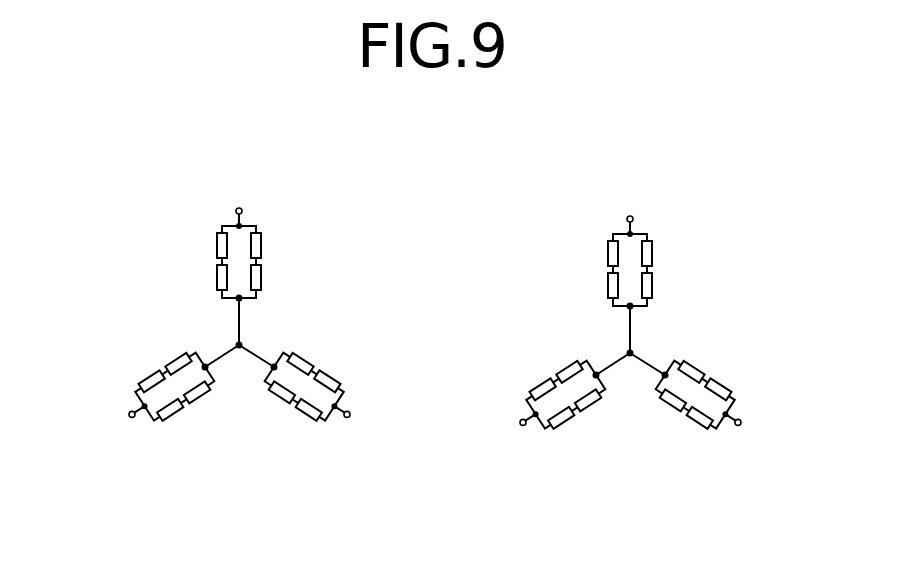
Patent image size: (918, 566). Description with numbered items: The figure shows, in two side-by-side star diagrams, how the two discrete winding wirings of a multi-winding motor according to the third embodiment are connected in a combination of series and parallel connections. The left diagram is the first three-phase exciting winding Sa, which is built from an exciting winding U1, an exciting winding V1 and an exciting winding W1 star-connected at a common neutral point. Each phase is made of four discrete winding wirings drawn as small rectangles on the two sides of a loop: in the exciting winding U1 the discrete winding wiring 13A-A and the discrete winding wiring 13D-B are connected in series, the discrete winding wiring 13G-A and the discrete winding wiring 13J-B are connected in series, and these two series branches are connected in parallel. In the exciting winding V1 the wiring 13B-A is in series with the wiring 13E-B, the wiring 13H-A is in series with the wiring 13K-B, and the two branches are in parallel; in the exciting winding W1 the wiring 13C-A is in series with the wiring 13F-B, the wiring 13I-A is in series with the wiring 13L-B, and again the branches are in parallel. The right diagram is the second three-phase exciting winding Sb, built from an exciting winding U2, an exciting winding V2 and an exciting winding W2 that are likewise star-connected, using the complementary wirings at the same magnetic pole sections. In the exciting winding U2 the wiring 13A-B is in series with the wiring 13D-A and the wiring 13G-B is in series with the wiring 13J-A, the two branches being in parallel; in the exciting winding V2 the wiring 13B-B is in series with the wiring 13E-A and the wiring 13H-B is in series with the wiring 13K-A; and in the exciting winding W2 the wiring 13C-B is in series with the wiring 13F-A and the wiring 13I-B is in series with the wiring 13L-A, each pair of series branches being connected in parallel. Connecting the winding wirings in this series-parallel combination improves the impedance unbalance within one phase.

The first three-phase exciting winding Sa is at (257, 336).
The second three-phase exciting winding Sb is at (648, 344).
The exciting winding U1 is at (211, 222).
The exciting winding V1 is at (395, 346).
The exciting winding W1 is at (188, 457).
The exciting winding U2 is at (593, 205).
The exciting winding V2 is at (781, 362).
The exciting winding W2 is at (561, 469).
The discrete winding wiring A 13A-A is at (217, 246).
The discrete winding wiring B 13J-B is at (261, 246).
The discrete winding wiring B 13D-B is at (217, 278).
The discrete winding wiring A 13G-A is at (261, 278).
The discrete winding wiring A 13C-A is at (176, 362).
The discrete winding wiring B 13F-B is at (148, 379).
The discrete winding wiring A 13I-A is at (165, 416).
The discrete winding wiring B 13L-B is at (195, 398).
The discrete winding wiring B 13K-B is at (305, 362).
The discrete winding wiring A 13H-A is at (334, 383).
The discrete winding wiring A 13B-A is at (279, 400).
The discrete winding wiring B 13E-B is at (308, 419).
The discrete winding wiring B 13A-B is at (572, 252).
The discrete winding wiring A 13J-A is at (682, 252).
The discrete winding wiring A 13D-A is at (572, 285).
The discrete winding wiring B 13G-B is at (687, 285).
The discrete winding wiring B 13C-B is at (537, 360).
The discrete winding wiring A 13F-A is at (507, 385).
The discrete winding wiring B 13I-B is at (546, 437).
The discrete winding wiring A 13L-A is at (606, 418).
The discrete winding wiring A 13K-A is at (723, 362).
The discrete winding wiring B 13H-B is at (756, 387).
The discrete winding wiring B 13B-B is at (659, 428).
The discrete winding wiring A 13E-A is at (723, 451).